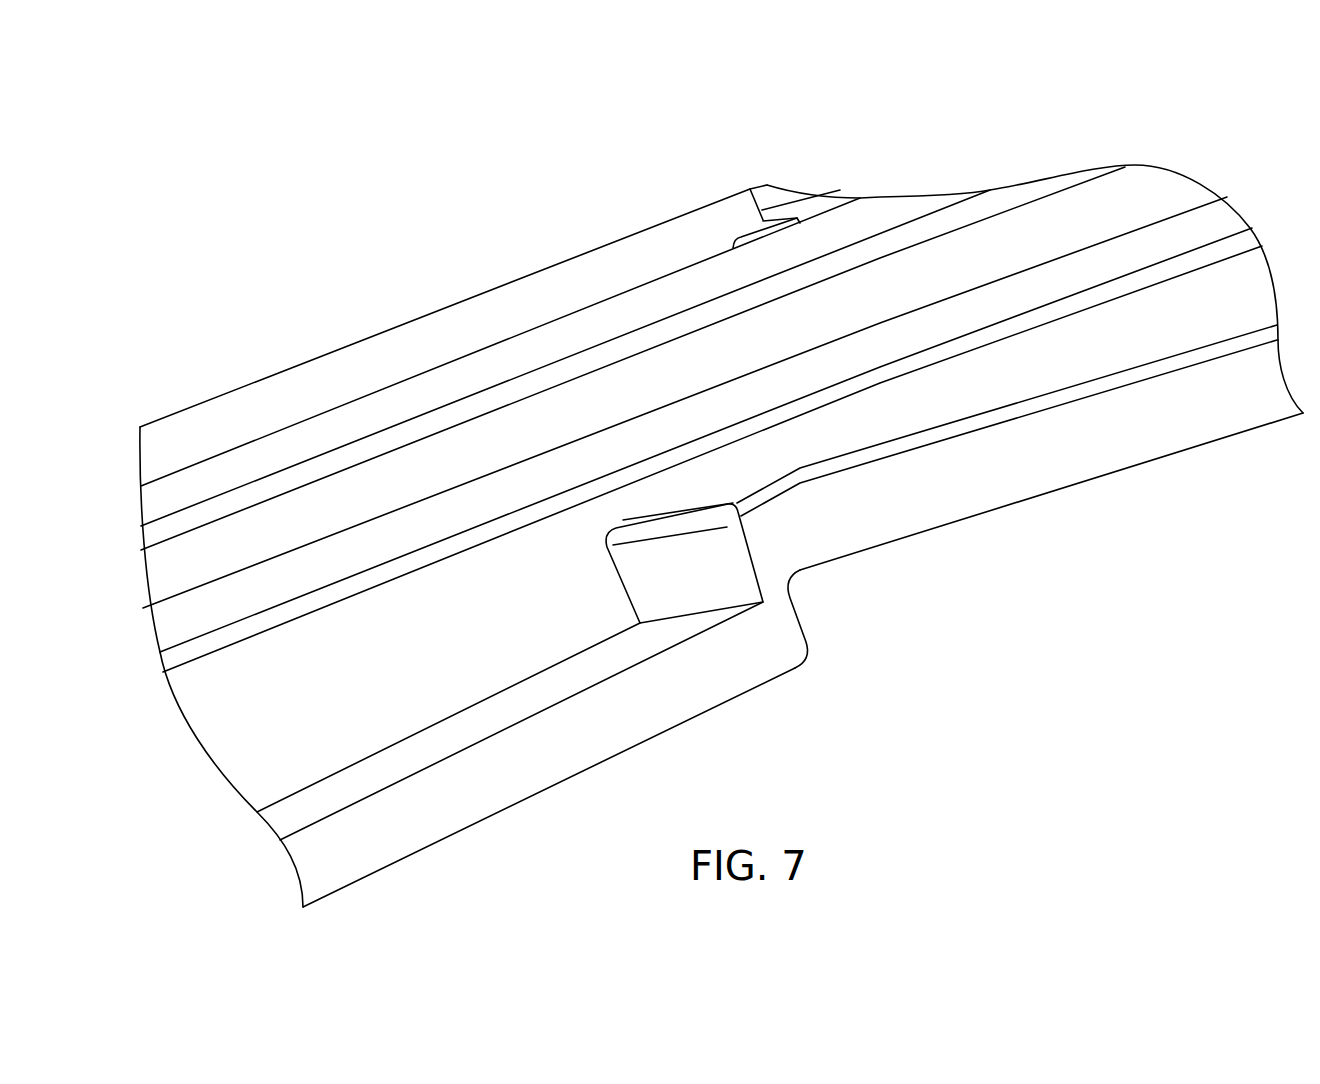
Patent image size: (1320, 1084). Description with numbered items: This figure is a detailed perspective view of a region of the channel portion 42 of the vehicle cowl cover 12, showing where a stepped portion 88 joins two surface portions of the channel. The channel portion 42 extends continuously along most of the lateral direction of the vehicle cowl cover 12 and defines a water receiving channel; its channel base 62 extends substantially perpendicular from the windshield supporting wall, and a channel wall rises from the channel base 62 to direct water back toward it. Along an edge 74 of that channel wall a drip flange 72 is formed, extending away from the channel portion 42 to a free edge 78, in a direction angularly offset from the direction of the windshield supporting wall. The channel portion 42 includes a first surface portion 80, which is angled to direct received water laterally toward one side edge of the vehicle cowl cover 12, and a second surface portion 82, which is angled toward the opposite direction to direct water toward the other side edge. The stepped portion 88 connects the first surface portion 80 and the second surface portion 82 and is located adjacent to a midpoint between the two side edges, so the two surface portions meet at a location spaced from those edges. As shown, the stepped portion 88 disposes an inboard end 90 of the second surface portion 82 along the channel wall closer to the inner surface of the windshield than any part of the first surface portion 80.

The vehicle cowl cover 12 is at (1195, 151).
The channel portion 42 is at (849, 640).
The channel base 62 is at (917, 397).
The drip flange 72 is at (1000, 472).
The edge of the channel wall 74 is at (1180, 368).
The free edge 78 is at (1173, 453).
The first surface portion 80 is at (375, 775).
The second surface portion 82 is at (1080, 390).
The stepped portion 88 is at (604, 593).
The inboard end 90 is at (705, 503).